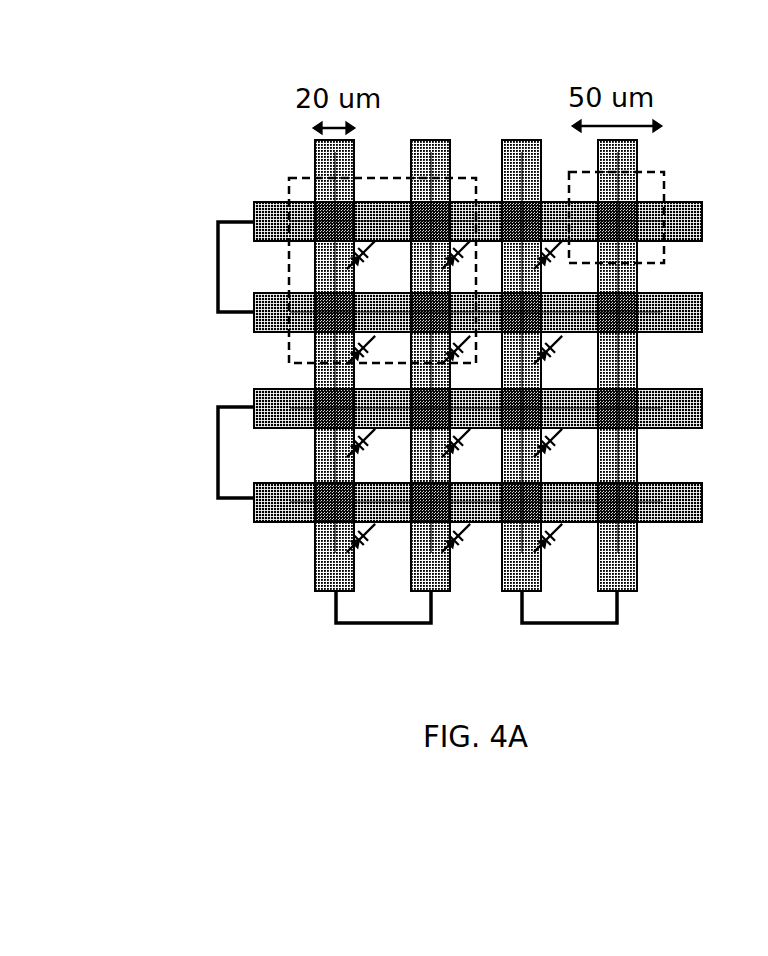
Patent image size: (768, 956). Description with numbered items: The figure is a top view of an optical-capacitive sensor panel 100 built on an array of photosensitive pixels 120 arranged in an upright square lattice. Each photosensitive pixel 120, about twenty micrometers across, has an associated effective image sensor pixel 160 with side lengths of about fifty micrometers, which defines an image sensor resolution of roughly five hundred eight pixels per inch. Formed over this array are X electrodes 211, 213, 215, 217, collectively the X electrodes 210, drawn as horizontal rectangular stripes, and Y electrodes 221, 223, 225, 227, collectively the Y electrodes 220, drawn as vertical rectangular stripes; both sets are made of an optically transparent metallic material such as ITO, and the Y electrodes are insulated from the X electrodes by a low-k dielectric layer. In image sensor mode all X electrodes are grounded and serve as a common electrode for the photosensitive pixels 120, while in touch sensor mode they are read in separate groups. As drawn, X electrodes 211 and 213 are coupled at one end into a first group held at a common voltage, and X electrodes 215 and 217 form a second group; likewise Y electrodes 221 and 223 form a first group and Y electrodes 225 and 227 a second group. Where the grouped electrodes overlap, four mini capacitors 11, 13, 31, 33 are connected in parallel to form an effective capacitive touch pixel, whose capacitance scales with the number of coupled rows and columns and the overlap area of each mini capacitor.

The optical-capacitive sensor panel 100 is at (497, 55).
The photosensitive pixel 120 is at (513, 213).
The effective image sensor pixel 160 is at (666, 182).
The X electrodes 210 is at (163, 139).
The X electrode 211 is at (253, 210).
The X electrode 213 is at (253, 300).
The X electrode 215 is at (253, 403).
The X electrode 217 is at (253, 487).
The Y electrodes 220 is at (378, 178).
The Y electrode 221 is at (346, 591).
The Y electrode 223 is at (440, 591).
The Y electrode 225 is at (533, 591).
The Y electrode 227 is at (627, 591).
The mini capacitor 11 is at (404, 269).
The mini capacitor 13 is at (476, 289).
The mini capacitor 31 is at (404, 359).
The mini capacitor 33 is at (497, 386).